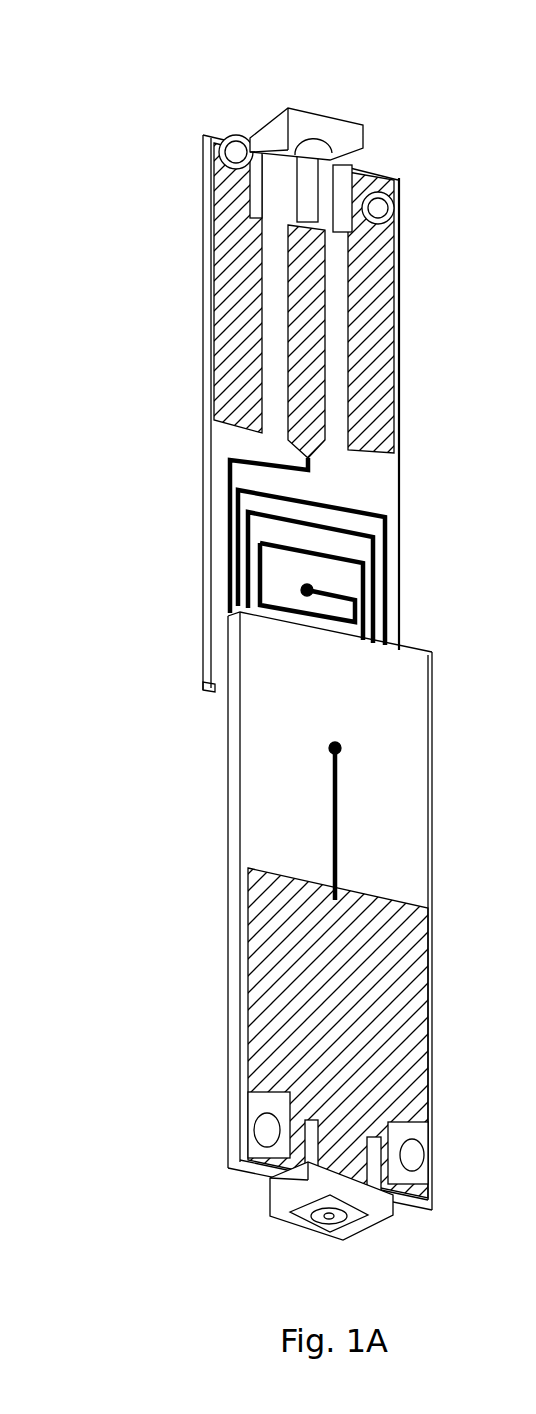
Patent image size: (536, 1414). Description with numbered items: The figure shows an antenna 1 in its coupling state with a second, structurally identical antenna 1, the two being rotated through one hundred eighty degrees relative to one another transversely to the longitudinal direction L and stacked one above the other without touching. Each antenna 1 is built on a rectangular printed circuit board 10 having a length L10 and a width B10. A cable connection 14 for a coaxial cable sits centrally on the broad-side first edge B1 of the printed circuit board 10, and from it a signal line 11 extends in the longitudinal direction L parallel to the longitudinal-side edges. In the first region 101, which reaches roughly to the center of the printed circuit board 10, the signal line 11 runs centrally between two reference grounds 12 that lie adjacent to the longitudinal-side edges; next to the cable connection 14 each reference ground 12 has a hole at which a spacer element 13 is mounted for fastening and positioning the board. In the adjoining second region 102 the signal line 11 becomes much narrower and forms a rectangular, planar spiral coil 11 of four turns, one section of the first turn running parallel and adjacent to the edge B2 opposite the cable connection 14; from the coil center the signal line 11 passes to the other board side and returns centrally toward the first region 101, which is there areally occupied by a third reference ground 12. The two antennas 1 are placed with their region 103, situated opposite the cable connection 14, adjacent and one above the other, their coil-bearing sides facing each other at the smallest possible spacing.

The antenna 1 is at (140, 72).
The printed circuit board 10 is at (383, 478).
The signal line 11 is at (383, 512).
The reference ground 12 is at (388, 326).
The spacer element 13 is at (392, 205).
The cable connection 14 is at (348, 128).
The first region 101 is at (212, 424).
The second region 102 is at (133, 416).
The region situated opposite the cable connection 103 is at (330, 707).
The length L10 is at (210, 690).
The longitudinal direction L is at (519, 867).
The width B10 is at (398, 178).
The first edge B1 is at (228, 132).
The edge situated opposite the cable connection B2 is at (208, 690).